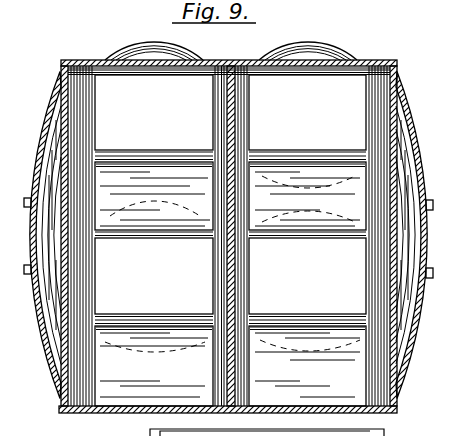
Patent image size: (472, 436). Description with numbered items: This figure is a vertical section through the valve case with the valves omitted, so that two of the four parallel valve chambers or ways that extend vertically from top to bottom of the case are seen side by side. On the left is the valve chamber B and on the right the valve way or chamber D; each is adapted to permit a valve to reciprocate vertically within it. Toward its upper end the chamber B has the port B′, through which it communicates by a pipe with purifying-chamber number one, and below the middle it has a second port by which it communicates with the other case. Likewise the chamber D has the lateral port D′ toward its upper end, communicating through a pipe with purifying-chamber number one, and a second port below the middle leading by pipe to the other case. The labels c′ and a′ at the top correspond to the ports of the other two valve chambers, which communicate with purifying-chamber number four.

The port B′ is at (176, 127).
The valve chamber B is at (128, 383).
The lateral port D′ is at (298, 120).
The valve way D is at (285, 383).
The port c′ is at (154, 30).
The lateral port a′ is at (311, 30).